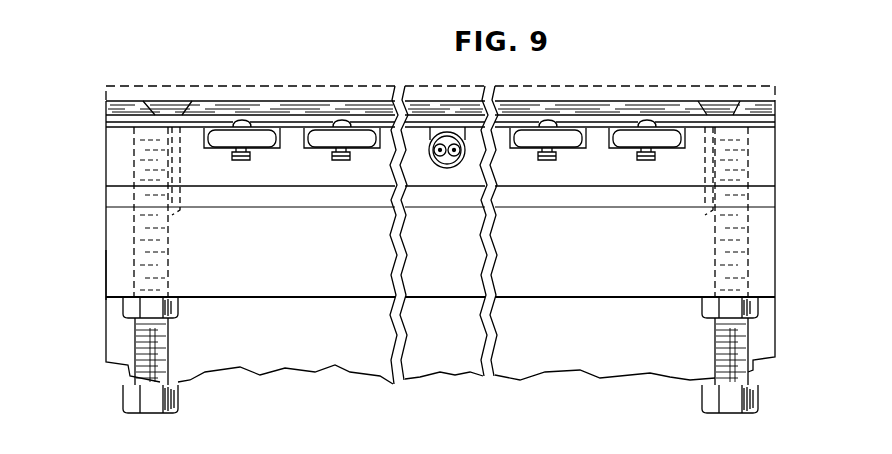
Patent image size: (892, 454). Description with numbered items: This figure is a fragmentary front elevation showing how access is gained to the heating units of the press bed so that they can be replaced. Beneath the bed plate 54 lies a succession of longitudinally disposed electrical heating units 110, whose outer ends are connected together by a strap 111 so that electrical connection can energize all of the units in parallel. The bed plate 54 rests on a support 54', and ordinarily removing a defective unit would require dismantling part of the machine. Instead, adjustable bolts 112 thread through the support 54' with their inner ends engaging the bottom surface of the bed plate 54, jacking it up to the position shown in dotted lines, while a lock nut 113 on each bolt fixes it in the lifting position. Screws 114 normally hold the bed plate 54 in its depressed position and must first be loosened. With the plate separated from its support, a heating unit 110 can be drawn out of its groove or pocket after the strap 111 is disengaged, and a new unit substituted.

The bed plate 54 is at (440, 90).
The support 54' is at (87, 278).
The electrical heating unit 110 is at (317, 142).
The strap 111 is at (295, 125).
The adjustable bolt 112 is at (163, 343).
The lock nut 113 is at (176, 313).
The screw 114 is at (699, 103).